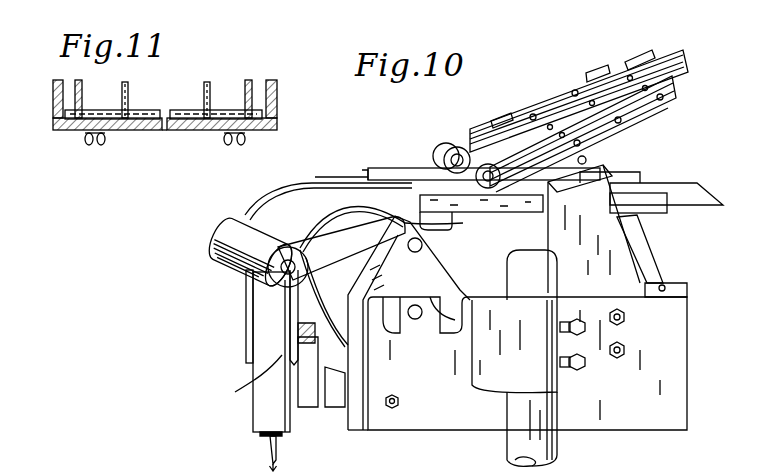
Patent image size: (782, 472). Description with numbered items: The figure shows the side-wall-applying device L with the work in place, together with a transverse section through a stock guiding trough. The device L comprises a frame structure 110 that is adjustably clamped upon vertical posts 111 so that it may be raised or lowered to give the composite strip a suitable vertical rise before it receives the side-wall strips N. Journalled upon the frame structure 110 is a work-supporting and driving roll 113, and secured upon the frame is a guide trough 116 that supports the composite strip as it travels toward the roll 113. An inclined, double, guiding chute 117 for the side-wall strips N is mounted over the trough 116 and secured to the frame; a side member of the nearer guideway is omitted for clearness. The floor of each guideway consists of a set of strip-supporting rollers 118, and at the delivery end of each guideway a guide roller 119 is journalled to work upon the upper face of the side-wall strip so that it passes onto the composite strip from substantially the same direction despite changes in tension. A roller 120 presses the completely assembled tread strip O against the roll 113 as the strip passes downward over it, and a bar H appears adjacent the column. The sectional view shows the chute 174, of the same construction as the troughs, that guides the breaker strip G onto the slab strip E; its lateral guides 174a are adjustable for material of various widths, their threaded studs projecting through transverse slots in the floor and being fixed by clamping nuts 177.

In FIG. 11, the lateral guides 174a is at (80, 90).
In FIG. 11, the chute 174 is at (197, 131).
In FIG. 11, the clamping nuts 177 is at (248, 144).
In FIG. 11, the breaker strip G is at (182, 118).
In FIG. 10, the breaker strip G is at (265, 438).
In FIG. 10, the completely assembled tread strip O is at (315, 198).
In FIG. 10, the inclined double guiding chute 117 is at (545, 98).
In FIG. 10, the side-wall strips N is at (643, 60).
In FIG. 10, the strip-supporting rollers 118 is at (533, 115).
In FIG. 10, the guide roller 119 is at (490, 172).
In FIG. 10, the guide trough 116 is at (613, 165).
In FIG. 10, the bar H is at (703, 193).
In FIG. 10, the frame structure 110 is at (527, 363).
In FIG. 10, the side-wall-applying device L is at (620, 432).
In FIG. 10, the work-supporting and driving roll 113 is at (313, 310).
In FIG. 10, the roller 120 is at (213, 247).
In FIG. 10, the slab strip E is at (263, 405).
In FIG. 10, the vertical posts 111 is at (515, 443).